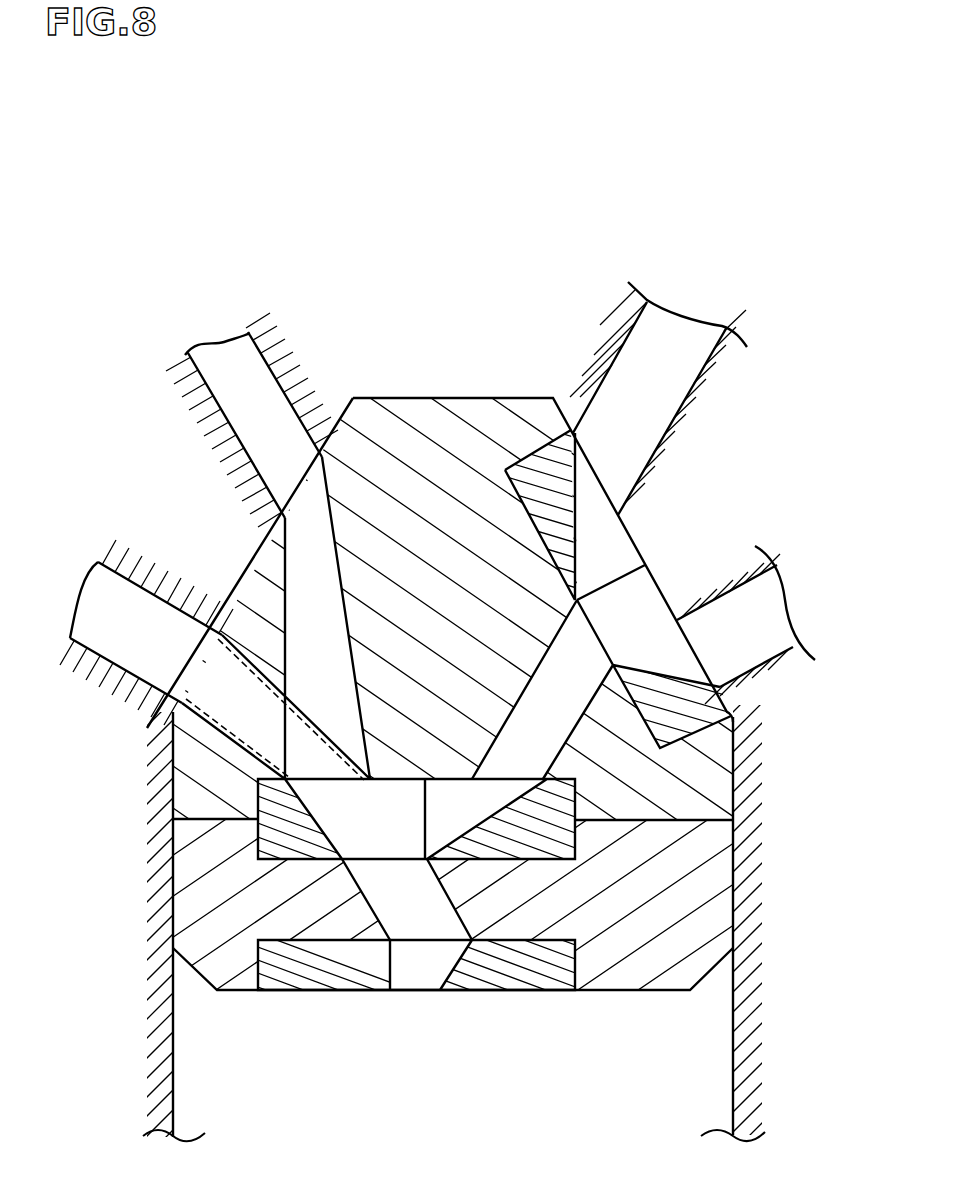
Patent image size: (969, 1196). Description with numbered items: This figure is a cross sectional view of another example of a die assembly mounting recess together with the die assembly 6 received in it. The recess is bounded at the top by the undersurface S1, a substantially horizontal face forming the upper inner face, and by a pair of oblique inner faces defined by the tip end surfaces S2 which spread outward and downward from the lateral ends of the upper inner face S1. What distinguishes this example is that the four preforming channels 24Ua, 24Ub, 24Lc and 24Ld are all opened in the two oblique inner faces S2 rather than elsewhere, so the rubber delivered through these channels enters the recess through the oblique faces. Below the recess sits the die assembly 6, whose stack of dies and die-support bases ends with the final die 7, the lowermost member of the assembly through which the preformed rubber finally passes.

The undersurface S1 is at (418, 398).
The tip end surfaces S2 is at (258, 585).
The die assembly 6 is at (655, 903).
The final die 7 is at (517, 963).
The preforming channel 24Ua is at (670, 340).
The preforming channel 24Ub is at (252, 382).
The preforming channel 24Lc is at (142, 650).
The preforming channel 24Ld is at (760, 625).